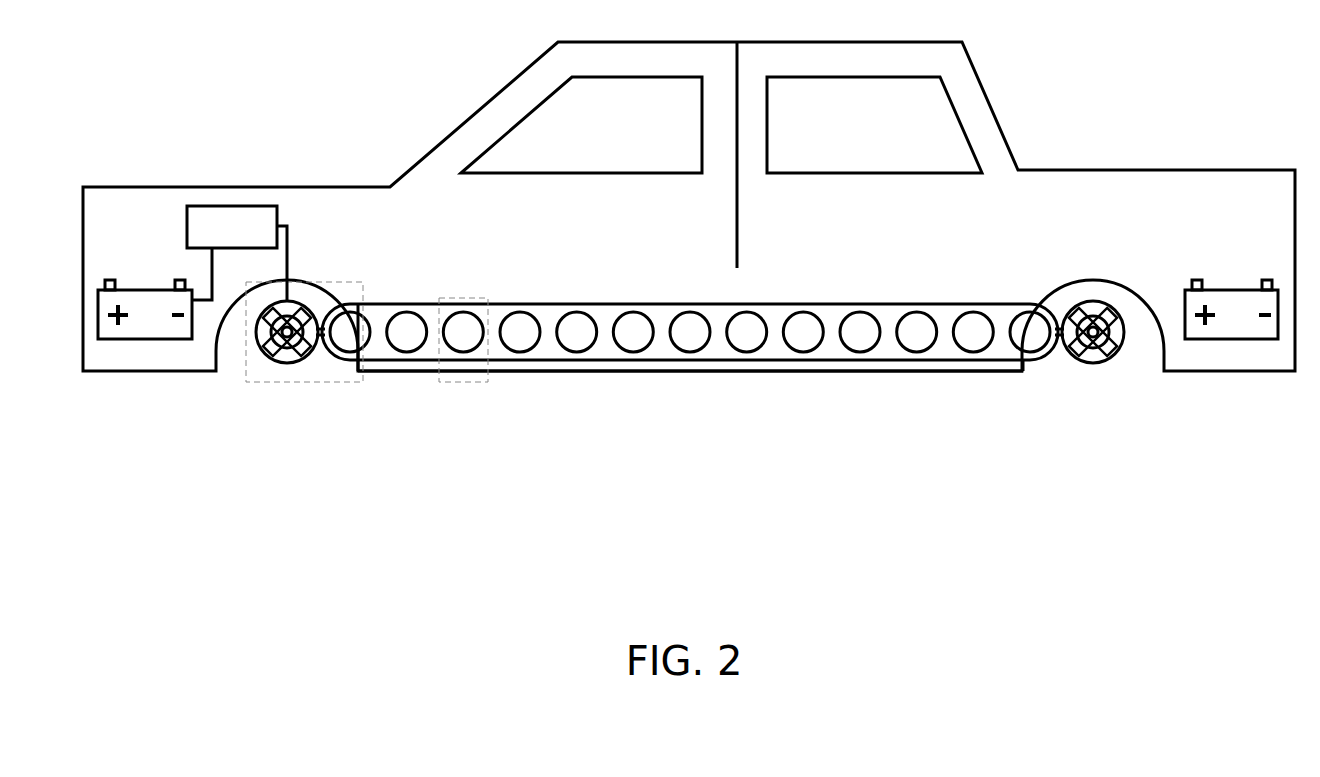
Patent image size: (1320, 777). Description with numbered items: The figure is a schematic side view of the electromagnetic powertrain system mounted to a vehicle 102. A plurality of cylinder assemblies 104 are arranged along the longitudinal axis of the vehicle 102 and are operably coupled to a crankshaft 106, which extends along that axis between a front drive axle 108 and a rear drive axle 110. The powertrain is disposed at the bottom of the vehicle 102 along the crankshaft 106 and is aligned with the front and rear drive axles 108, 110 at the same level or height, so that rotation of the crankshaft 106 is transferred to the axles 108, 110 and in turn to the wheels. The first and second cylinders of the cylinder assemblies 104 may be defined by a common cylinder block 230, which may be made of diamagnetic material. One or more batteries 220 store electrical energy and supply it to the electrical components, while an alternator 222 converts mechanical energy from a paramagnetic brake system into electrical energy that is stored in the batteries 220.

The vehicle 102 is at (467, 120).
The cylinder assemblies 104 is at (467, 380).
The crankshaft 106 is at (313, 337).
The front drive axle 108 is at (283, 335).
The rear drive axle 110 is at (1099, 340).
The batteries 220 is at (155, 307).
The alternator 222 is at (237, 253).
The cylinder block 230 is at (505, 310).